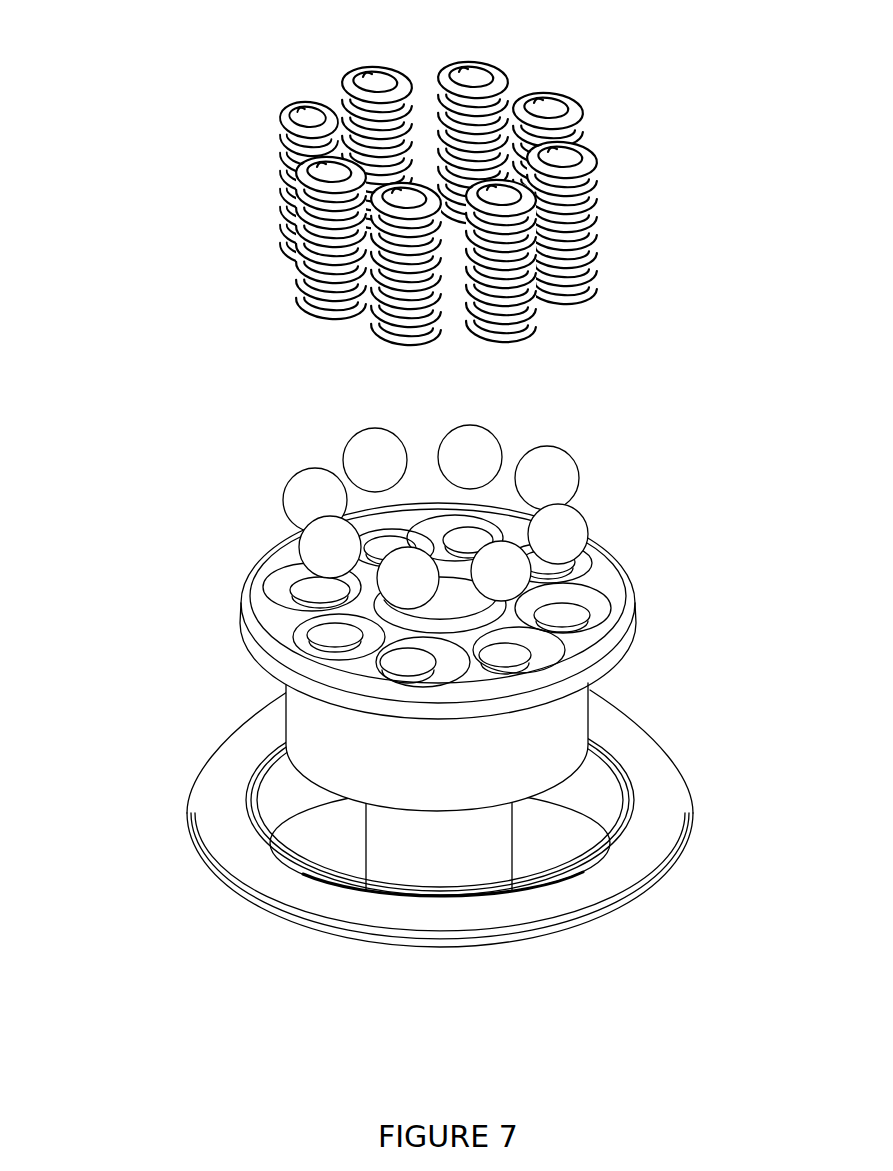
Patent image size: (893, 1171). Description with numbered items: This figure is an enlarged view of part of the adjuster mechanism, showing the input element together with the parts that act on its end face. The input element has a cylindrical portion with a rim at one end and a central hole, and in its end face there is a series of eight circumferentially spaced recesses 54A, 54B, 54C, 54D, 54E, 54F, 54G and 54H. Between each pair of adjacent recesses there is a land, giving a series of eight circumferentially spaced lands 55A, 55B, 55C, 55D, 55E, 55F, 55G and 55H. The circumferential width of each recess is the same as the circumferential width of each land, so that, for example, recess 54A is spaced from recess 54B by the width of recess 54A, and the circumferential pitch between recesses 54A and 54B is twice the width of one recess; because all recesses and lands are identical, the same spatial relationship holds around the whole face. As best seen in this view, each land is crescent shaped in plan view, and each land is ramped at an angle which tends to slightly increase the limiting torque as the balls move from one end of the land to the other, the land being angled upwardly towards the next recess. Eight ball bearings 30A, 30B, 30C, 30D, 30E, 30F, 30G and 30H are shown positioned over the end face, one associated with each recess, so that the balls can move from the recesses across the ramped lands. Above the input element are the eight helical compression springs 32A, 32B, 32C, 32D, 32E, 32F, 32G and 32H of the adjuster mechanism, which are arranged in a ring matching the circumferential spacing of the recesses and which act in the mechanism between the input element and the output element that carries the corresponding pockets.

The ball bearing 30A is at (386, 591).
The ball bearing 30B is at (479, 584).
The ball bearing 30C is at (536, 547).
The ball bearing 30D is at (524, 491).
The ball bearing 30E is at (448, 470).
The ball bearing 30F is at (353, 473).
The ball bearing 30G is at (292, 513).
The ball bearing 30H is at (307, 560).
The spring 32A is at (405, 342).
The spring 32B is at (517, 330).
The spring 32C is at (585, 288).
The spring 32D is at (562, 100).
The spring 32E is at (483, 68).
The spring 32F is at (365, 78).
The spring 32G is at (292, 122).
The spring 32H is at (302, 305).
The recess 54A is at (405, 675).
The recess 54B is at (553, 658).
The recess 54C is at (585, 603).
The recess 54D is at (560, 560).
The recess 54E is at (435, 527).
The recess 54F is at (380, 540).
The recess 54G is at (300, 607).
The recess 54H is at (310, 640).
The land 55A is at (450, 667).
The land 55B is at (575, 662).
The land 55C is at (570, 582).
The land 55D is at (516, 535).
The land 55E is at (475, 535).
The land 55F is at (303, 588).
The land 55G is at (300, 607).
The land 55H is at (287, 700).